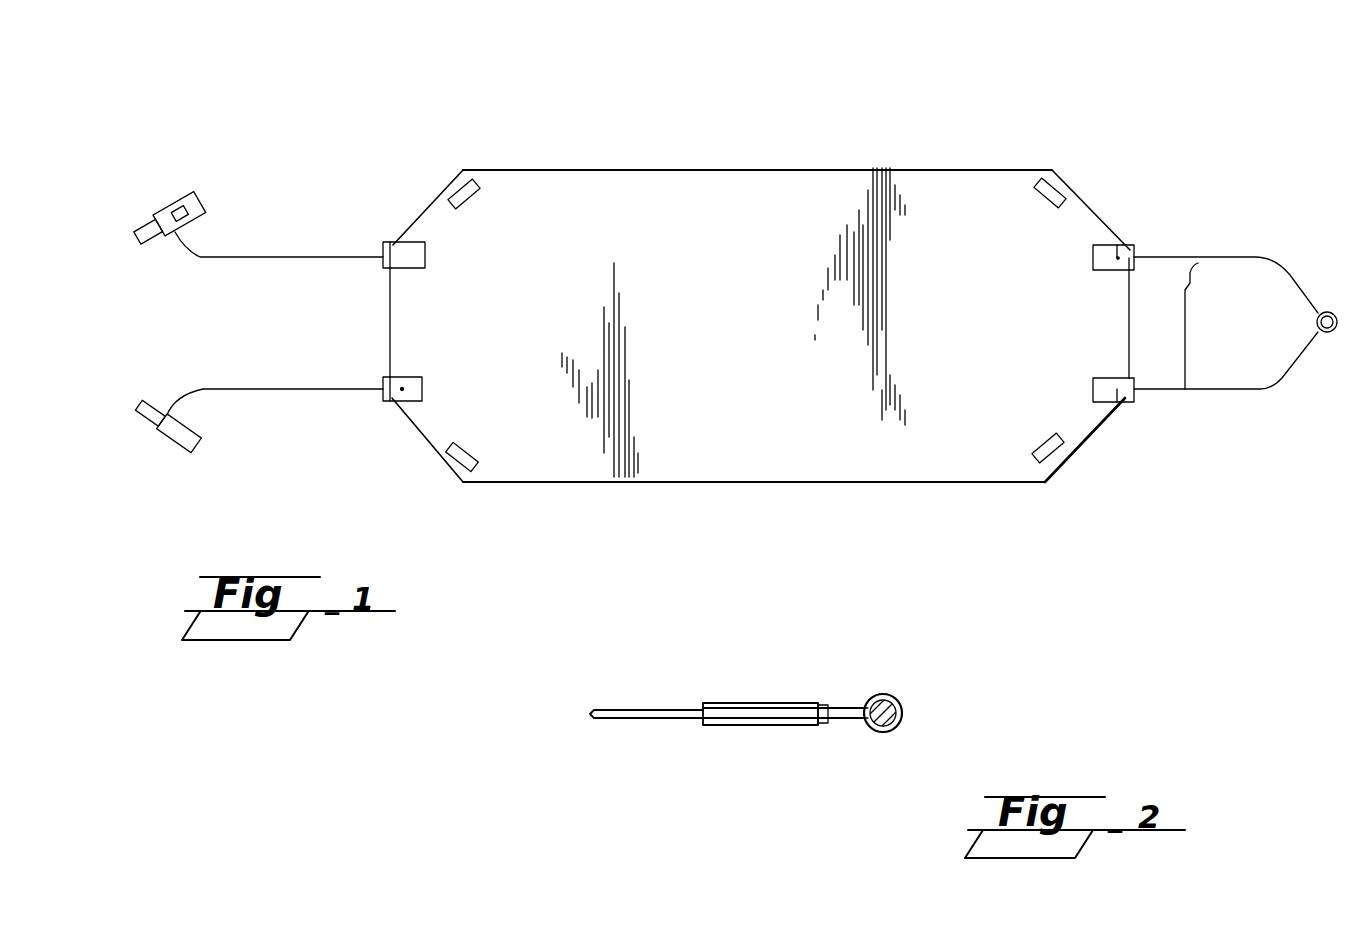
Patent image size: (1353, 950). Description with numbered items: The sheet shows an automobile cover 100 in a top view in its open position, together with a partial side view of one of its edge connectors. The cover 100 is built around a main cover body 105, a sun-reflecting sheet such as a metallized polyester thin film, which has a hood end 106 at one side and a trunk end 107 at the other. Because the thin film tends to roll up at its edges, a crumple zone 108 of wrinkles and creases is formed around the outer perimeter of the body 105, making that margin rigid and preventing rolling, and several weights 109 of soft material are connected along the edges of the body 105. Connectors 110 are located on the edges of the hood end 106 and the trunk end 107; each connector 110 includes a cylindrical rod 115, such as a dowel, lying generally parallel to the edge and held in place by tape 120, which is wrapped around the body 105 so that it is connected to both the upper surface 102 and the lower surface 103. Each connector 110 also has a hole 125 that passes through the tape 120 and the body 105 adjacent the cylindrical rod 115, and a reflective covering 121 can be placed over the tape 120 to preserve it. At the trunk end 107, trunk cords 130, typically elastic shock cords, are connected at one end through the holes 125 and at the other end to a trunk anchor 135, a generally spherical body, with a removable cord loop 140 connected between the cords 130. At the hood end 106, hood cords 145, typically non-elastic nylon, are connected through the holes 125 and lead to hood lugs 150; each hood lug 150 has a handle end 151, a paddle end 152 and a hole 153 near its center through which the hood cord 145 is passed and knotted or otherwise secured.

In FIG. 1, the automobile cover 100 is at (275, 99).
In FIG. 2, the automobile cover 100 is at (645, 632).
In FIG. 2, the upper surface 102 is at (668, 710).
In FIG. 2, the lower surface 103 is at (632, 722).
In FIG. 1, the main cover body 105 is at (715, 215).
In FIG. 2, the main cover body 105 is at (593, 713).
In FIG. 1, the hood end 106 is at (350, 160).
In FIG. 1, the trunk end 107 is at (1192, 226).
In FIG. 1, the crumple zone 108 is at (612, 187).
In FIG. 1, the weights 109 is at (478, 192).
In FIG. 1, the connectors 110 is at (367, 285).
In FIG. 2, the connectors 110 is at (862, 752).
In FIG. 1, the cylindrical rod 115 is at (400, 255).
In FIG. 2, the cylindrical rod 115 is at (902, 714).
In FIG. 1, the tape 120 is at (427, 257).
In FIG. 2, the tape 120 is at (713, 702).
In FIG. 2, the reflective covering 121 is at (755, 695).
In FIG. 1, the hole 125 is at (396, 246).
In FIG. 2, the hole 125 is at (822, 728).
In FIG. 1, the trunk cords 130 is at (1256, 257).
In FIG. 1, the trunk anchor 135 is at (1298, 306).
In FIG. 1, the cord loop 140 is at (1186, 360).
In FIG. 1, the hood cords 145 is at (238, 257).
In FIG. 1, the hood lugs 150 is at (183, 203).
In FIG. 1, the handle end 151 is at (147, 228).
In FIG. 1, the paddle end 152 is at (197, 205).
In FIG. 1, the hole 153 is at (178, 232).